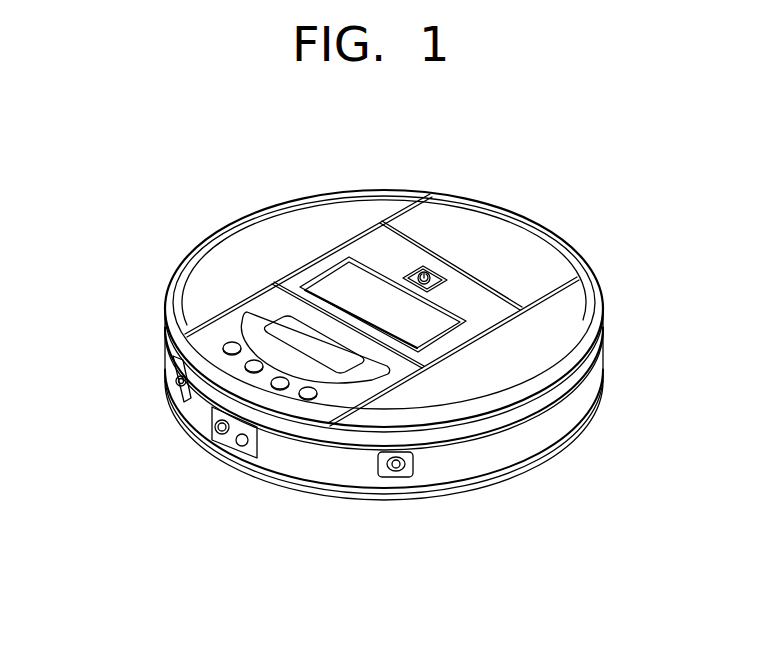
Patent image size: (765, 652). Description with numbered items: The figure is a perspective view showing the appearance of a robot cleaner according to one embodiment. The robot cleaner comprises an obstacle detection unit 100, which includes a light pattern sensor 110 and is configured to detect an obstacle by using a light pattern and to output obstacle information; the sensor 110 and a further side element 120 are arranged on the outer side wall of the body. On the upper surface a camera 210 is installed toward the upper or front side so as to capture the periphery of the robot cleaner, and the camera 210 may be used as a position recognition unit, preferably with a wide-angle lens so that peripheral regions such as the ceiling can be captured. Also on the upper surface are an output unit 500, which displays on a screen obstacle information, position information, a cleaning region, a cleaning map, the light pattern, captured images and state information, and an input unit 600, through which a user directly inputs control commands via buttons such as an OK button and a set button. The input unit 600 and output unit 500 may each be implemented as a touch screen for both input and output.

The obstacle detection unit 100 is at (320, 592).
The light pattern sensor 110 is at (222, 428).
The side sensor 120 is at (388, 480).
The camera 210 is at (432, 272).
The output unit 500 is at (338, 279).
The input unit 600 is at (230, 318).